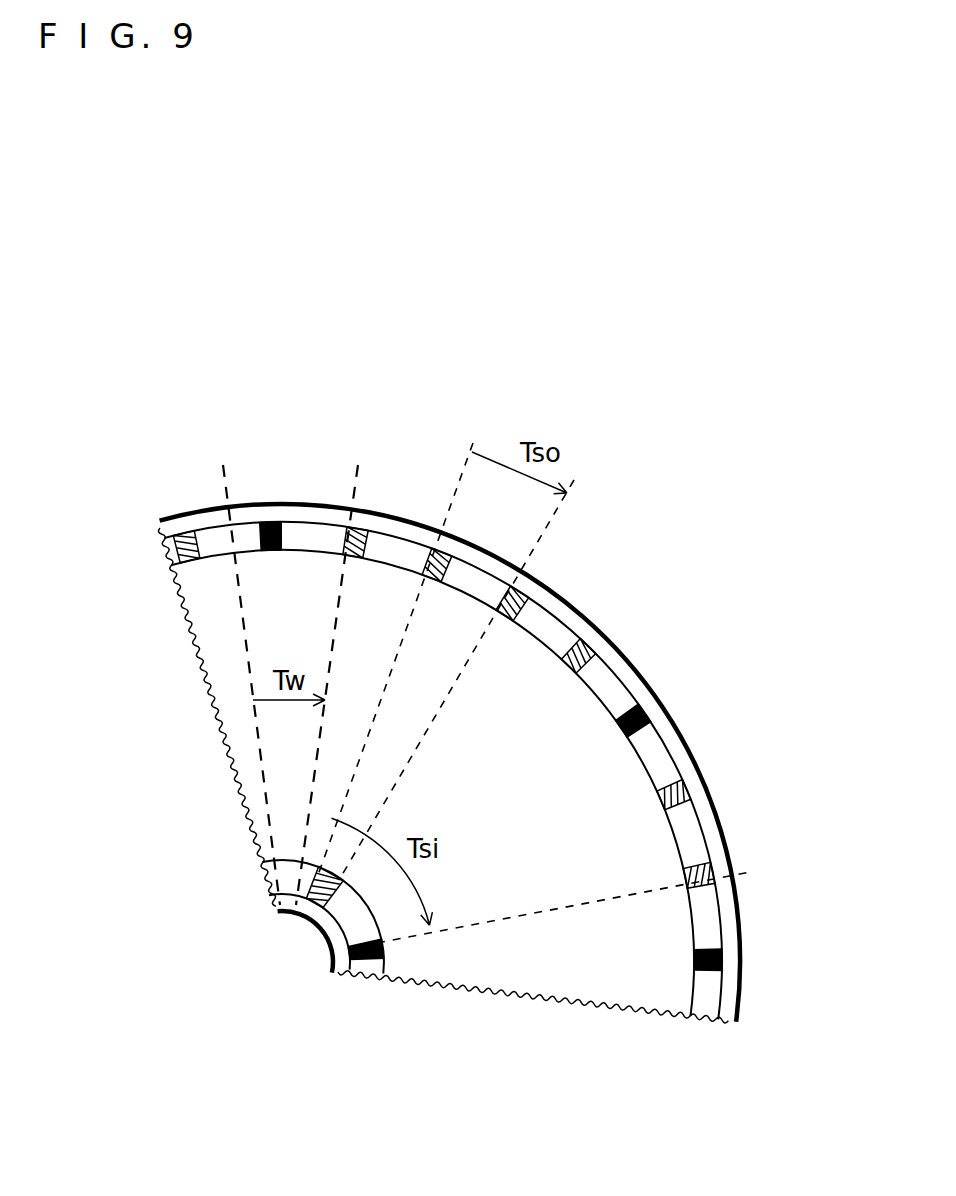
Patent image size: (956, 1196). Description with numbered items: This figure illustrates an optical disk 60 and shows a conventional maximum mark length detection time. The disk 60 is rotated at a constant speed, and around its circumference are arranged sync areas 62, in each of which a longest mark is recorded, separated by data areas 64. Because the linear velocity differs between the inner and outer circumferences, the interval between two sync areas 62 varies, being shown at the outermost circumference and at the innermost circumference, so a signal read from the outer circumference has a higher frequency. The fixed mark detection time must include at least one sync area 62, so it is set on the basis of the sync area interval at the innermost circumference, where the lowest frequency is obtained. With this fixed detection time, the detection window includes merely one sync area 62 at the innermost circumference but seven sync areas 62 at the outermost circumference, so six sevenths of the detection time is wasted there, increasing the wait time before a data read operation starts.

The disk 60 is at (789, 999).
The sync area 62 is at (712, 878).
The data area 64 is at (657, 755).